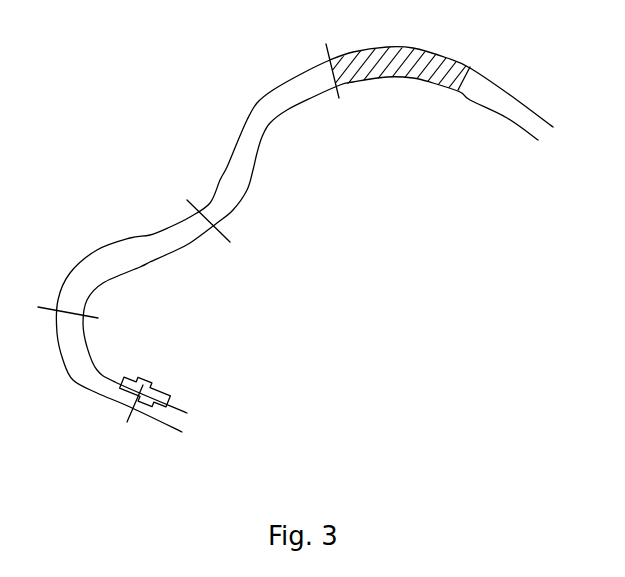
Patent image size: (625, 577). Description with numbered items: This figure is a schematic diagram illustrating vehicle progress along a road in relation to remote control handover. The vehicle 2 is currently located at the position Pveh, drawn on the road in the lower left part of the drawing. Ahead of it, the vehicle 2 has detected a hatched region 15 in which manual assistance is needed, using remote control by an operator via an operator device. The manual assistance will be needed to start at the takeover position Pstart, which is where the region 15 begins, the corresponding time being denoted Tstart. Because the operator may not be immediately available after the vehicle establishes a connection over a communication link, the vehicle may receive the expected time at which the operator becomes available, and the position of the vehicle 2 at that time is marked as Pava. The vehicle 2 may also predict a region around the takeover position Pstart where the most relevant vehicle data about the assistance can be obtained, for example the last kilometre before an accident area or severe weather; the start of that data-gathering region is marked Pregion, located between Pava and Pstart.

The vehicle 2 is at (147, 378).
The region 15 is at (447, 68).
The takeover position Pstart is at (365, 83).
The position of the start of the region Pregion is at (251, 235).
The position of the vehicle at Tava Pava is at (101, 322).
The position of the vehicle Pveh is at (121, 421).